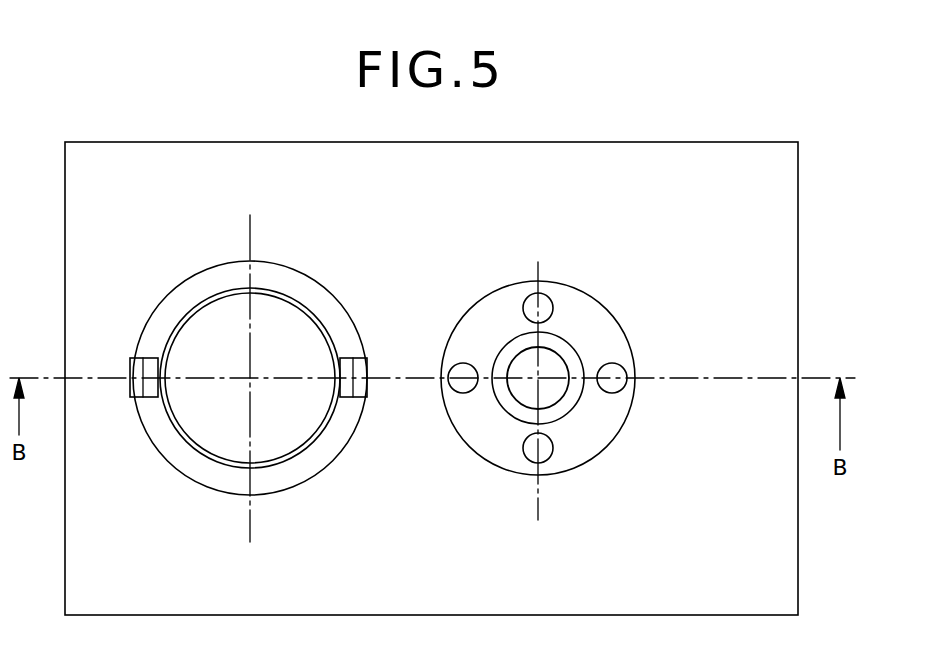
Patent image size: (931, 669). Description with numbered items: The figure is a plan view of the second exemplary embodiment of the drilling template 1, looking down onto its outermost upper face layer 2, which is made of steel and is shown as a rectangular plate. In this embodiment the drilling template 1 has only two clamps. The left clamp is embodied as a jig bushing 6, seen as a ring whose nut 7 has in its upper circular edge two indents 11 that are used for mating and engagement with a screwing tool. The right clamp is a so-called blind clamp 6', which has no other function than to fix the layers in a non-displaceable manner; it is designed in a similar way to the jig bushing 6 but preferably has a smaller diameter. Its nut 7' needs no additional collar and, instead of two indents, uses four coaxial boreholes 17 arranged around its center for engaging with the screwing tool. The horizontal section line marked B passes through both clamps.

The drilling template 1 is at (793, 93).
The upper face layer 2 is at (767, 263).
The jig bushing 6 is at (195, 402).
The nut 7 is at (250, 405).
The indents 11 is at (140, 368).
The blind clamp 6' is at (505, 418).
The nut 7' is at (553, 388).
The coaxial boreholes 17 is at (611, 372).